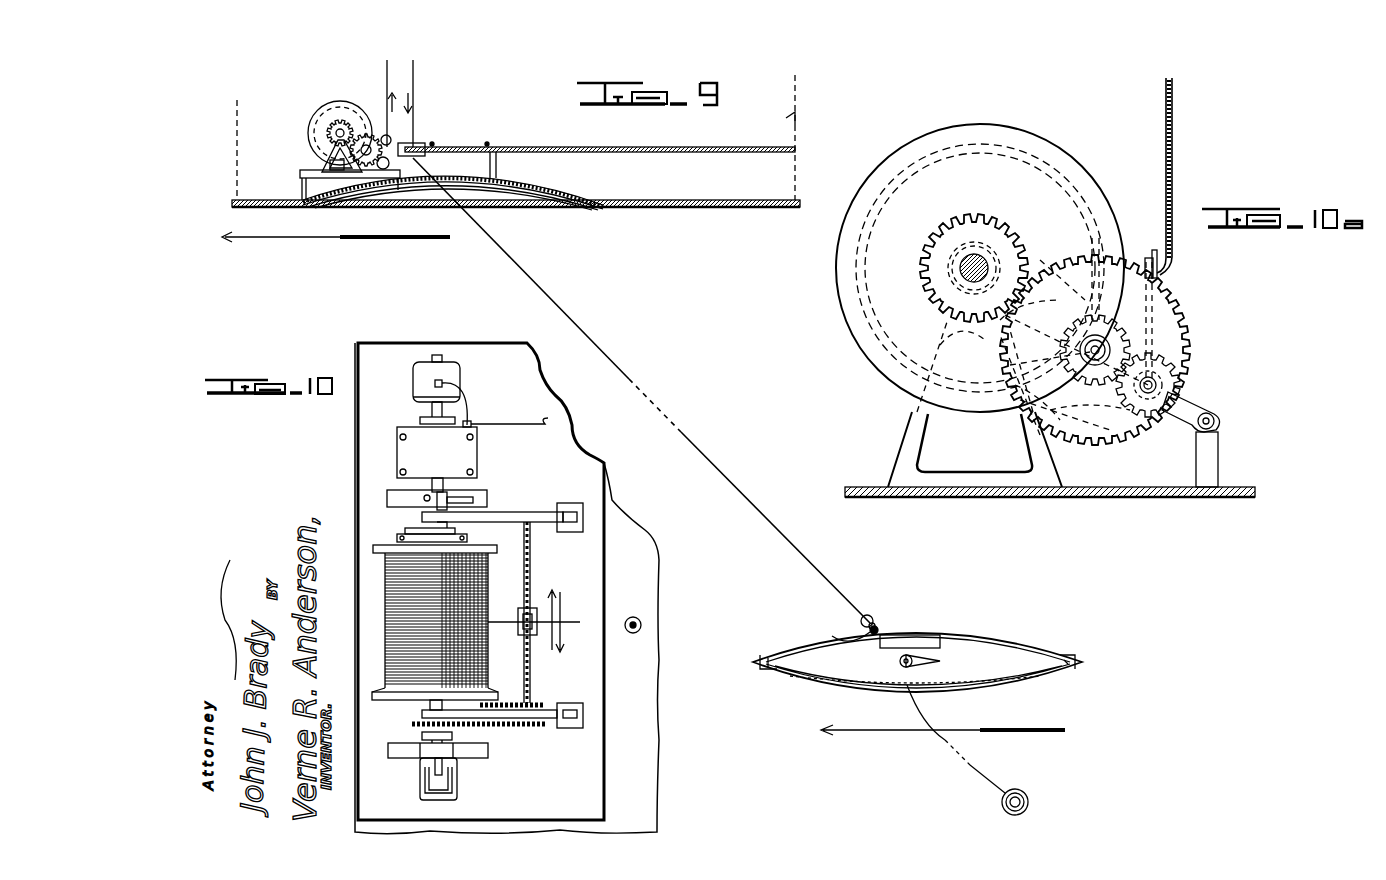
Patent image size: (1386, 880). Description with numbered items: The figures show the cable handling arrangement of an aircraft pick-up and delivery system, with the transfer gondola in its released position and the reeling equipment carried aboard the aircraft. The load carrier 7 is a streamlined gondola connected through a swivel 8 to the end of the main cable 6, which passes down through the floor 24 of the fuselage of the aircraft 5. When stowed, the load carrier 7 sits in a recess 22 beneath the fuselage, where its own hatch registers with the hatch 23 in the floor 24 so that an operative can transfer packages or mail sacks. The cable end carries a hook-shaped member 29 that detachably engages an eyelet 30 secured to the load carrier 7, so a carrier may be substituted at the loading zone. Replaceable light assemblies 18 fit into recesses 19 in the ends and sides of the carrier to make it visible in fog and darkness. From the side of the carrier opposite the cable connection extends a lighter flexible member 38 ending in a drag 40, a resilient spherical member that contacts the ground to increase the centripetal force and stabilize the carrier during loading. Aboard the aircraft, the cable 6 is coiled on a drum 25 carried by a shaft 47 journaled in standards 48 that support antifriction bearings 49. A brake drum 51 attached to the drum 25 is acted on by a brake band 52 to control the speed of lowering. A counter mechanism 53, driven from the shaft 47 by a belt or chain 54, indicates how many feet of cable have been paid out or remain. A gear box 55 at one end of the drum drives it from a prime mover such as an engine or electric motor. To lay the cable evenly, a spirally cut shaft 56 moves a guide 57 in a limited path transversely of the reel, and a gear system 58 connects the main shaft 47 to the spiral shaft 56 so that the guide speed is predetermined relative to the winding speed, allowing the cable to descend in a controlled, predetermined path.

In FIG. 9, the aircraft 5 is at (745, 133).
In FIG. 9, the cable 6 is at (395, 78).
In FIG. 10a, the cable 6 is at (1174, 152).
In FIG. 10, the cable 6 is at (506, 622).
In FIG. 9, the load carrier 7 is at (1024, 640).
In FIG. 9, the swivel 8 is at (878, 612).
In FIG. 9, the light assemblies 18 is at (1076, 660).
In FIG. 9, the recesses 19 is at (930, 668).
In FIG. 9, the recess 22 is at (527, 203).
In FIG. 9, the hatch 23 is at (471, 147).
In FIG. 9, the floor 24 is at (628, 153).
In FIG. 9, the drum 25 is at (350, 111).
In FIG. 10a, the drum 25 is at (875, 238).
In FIG. 10, the drum 25 is at (435, 622).
In FIG. 9, the hook-shaped member 29 is at (881, 622).
In FIG. 9, the eyelet 30 is at (834, 637).
In FIG. 9, the flexible member 38 is at (984, 787).
In FIG. 9, the drag 40 is at (1029, 806).
In FIG. 9, the shaft 47 is at (332, 128).
In FIG. 10a, the shaft 47 is at (972, 278).
In FIG. 10, the shaft 47 is at (426, 706).
In FIG. 9, the standards 48 is at (320, 158).
In FIG. 10a, the standards 48 is at (915, 422).
In FIG. 10, the standards 48 is at (405, 497).
In FIG. 10, the antifriction bearings 49 is at (426, 761).
In FIG. 10, the brake drum 51 is at (400, 536).
In FIG. 10, the brake band 52 is at (530, 536).
In FIG. 10, the counter mechanism 53 is at (456, 795).
In FIG. 10, the belt or chain 54 is at (460, 741).
In FIG. 10, the gear box 55 is at (400, 450).
In FIG. 10a, the spirally cut shaft 56 is at (1176, 380).
In FIG. 10, the spirally cut shaft 56 is at (535, 660).
In FIG. 10a, the guide 57 is at (1150, 256).
In FIG. 10, the guide 57 is at (537, 620).
In FIG. 10a, the gear system 58 is at (1013, 262).
In FIG. 10, the gear system 58 is at (546, 704).